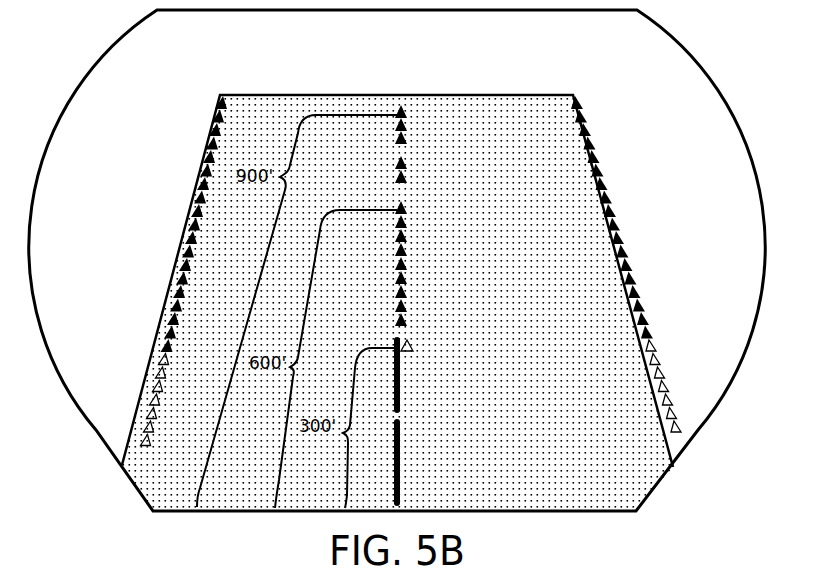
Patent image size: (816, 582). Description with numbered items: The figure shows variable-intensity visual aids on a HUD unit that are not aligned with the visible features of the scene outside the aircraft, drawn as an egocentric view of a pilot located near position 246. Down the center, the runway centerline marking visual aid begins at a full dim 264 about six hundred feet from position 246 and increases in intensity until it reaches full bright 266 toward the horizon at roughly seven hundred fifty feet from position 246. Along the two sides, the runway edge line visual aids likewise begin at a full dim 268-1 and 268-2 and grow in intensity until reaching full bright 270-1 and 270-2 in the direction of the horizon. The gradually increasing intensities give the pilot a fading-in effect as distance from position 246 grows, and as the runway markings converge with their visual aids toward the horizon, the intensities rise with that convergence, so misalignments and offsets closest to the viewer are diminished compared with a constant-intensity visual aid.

The position 246 is at (408, 507).
The full dim 264 is at (418, 350).
The full bright 266 is at (411, 168).
The full dim 268-1 is at (130, 436).
The full dim 268-2 is at (661, 428).
The full bright 270-1 is at (194, 212).
The full bright 270-2 is at (599, 217).